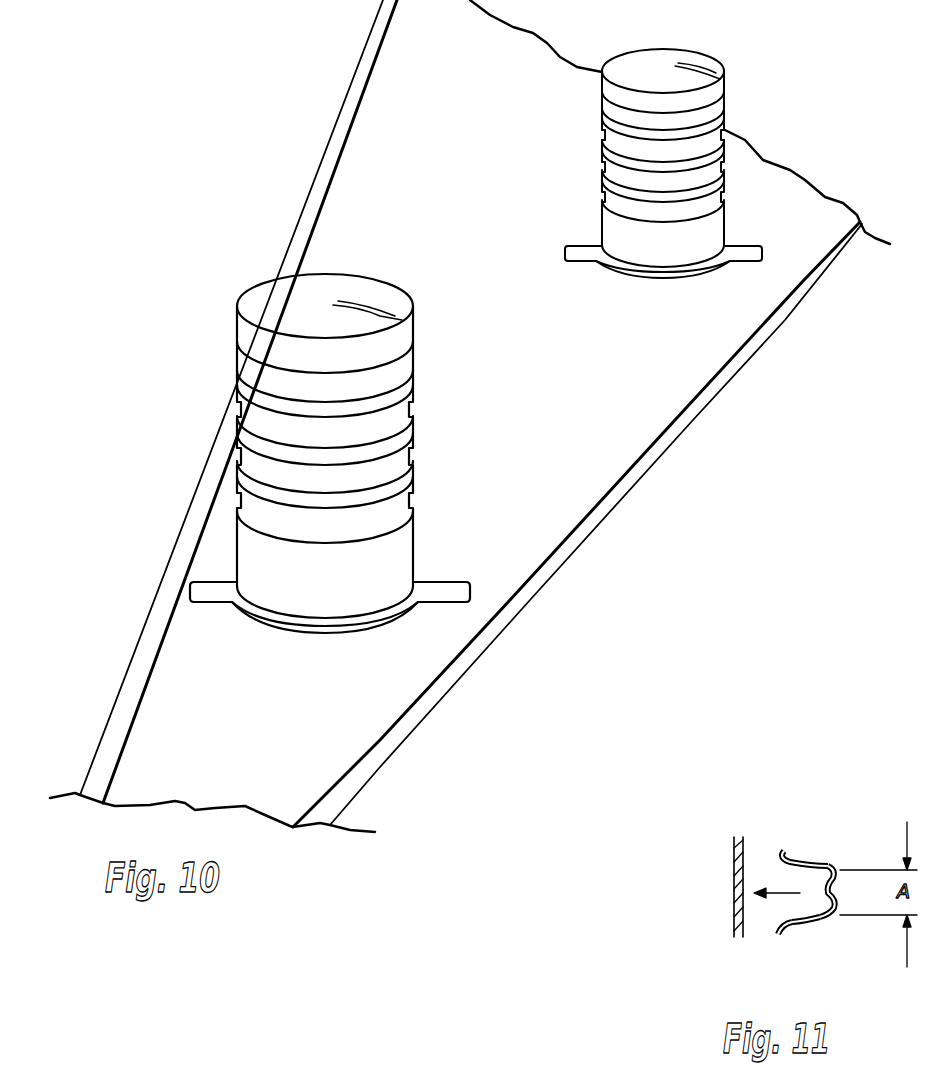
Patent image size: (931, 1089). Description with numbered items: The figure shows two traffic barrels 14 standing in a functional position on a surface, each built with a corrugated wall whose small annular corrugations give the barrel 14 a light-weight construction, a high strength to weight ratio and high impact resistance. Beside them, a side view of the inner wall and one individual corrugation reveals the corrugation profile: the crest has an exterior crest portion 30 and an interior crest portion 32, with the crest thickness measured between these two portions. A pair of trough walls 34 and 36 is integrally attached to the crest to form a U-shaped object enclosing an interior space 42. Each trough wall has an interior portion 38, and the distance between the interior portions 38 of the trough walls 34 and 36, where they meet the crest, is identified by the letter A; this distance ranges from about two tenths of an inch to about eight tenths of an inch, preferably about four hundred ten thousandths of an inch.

In FIG. 10, the traffic barrel 14 is at (418, 404).
In FIG. 11, the exterior crest portion 30 is at (828, 884).
In FIG. 11, the interior crest portion 32 is at (822, 925).
In FIG. 11, the trough wall 34 is at (800, 855).
In FIG. 11, the trough wall 36 is at (796, 926).
In FIG. 11, the interior portion 38 is at (793, 872).
In FIG. 11, the interior space 42 is at (803, 903).